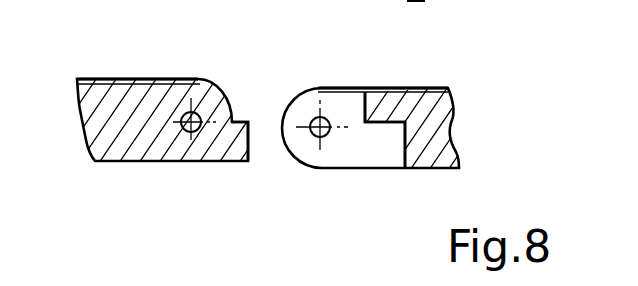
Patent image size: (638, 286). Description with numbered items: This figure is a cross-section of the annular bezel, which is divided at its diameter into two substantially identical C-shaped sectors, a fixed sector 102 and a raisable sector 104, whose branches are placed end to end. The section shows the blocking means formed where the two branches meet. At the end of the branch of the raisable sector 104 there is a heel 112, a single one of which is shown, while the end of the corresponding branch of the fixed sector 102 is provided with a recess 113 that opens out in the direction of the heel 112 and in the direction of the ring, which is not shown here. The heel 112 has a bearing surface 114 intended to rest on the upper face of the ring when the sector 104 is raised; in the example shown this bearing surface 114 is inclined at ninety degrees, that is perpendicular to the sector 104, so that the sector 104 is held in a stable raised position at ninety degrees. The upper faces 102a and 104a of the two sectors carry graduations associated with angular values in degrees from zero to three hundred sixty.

The raisable sector 104 is at (135, 128).
The upper face of sector 104 104a is at (139, 79).
The bearing surface 114 is at (254, 128).
The heel 112 is at (240, 145).
The fixed sector 102 is at (433, 143).
The upper face of sector 102 102a is at (428, 88).
The recess 113 is at (386, 140).